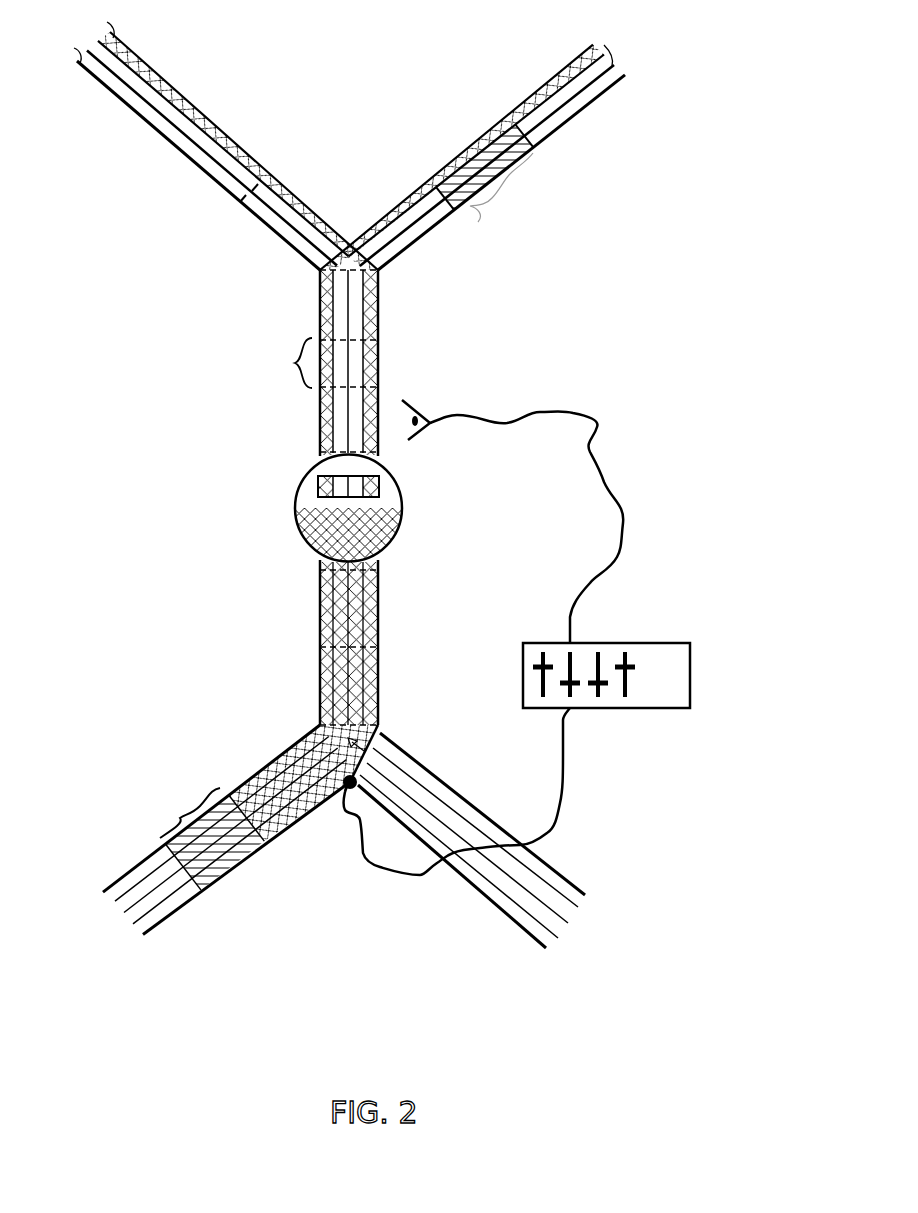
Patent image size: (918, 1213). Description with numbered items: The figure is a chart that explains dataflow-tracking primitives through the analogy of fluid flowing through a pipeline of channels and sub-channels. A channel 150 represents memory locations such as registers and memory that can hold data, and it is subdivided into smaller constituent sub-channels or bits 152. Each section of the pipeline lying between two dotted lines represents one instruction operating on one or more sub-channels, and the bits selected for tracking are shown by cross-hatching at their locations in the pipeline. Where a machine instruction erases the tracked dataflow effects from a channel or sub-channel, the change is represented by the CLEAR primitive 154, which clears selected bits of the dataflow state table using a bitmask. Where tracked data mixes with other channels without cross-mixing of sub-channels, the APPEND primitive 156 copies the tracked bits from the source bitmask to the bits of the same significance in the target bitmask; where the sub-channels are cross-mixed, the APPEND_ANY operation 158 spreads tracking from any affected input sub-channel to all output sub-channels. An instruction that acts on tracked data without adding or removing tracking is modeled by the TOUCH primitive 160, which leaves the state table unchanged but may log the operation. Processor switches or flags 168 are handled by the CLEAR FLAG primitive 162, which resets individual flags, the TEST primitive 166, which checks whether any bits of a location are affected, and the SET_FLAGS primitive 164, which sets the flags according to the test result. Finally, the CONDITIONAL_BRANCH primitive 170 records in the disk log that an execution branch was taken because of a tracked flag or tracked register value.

The channel 150 is at (167, 139).
The sub-channels or bits 152 is at (109, 26).
The CLEAR primitive 154 is at (533, 147).
The APPEND primitive 156 is at (380, 270).
The APPEND_ANY operation 158 is at (403, 506).
The TOUCH primitive 160 is at (378, 345).
The CLEAR FLAG primitive 162 is at (750, 588).
The SET_FLAGS primitive 164 is at (742, 538).
The TEST primitive 166 is at (717, 490).
The switches or flags 168 is at (690, 668).
The CONDITIONAL_BRANCH primitive 170 is at (380, 727).